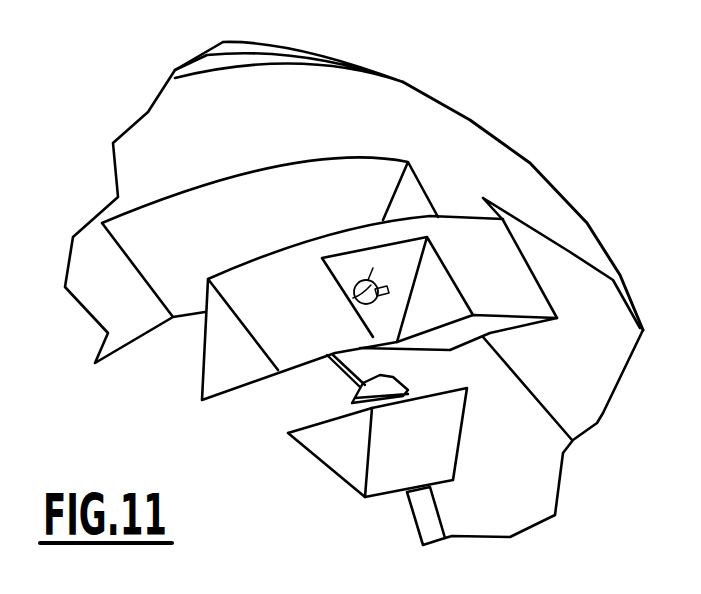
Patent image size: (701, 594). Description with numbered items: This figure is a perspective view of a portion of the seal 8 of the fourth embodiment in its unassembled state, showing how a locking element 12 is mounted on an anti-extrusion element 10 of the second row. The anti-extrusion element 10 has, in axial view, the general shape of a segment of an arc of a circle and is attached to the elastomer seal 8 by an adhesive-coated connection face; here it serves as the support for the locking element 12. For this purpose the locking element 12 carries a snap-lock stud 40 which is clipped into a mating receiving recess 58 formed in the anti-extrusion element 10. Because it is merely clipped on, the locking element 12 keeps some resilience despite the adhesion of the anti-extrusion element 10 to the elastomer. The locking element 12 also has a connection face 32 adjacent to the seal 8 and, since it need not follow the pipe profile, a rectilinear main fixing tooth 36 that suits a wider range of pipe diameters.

The seal 8 is at (368, 113).
The anti-extrusion element 10 is at (493, 283).
The receiving recess 58 is at (385, 270).
The connection face 32 is at (447, 387).
The snap-lock stud 40 is at (350, 392).
The main fixing tooth 36 is at (310, 447).
The locking element 12 is at (395, 460).